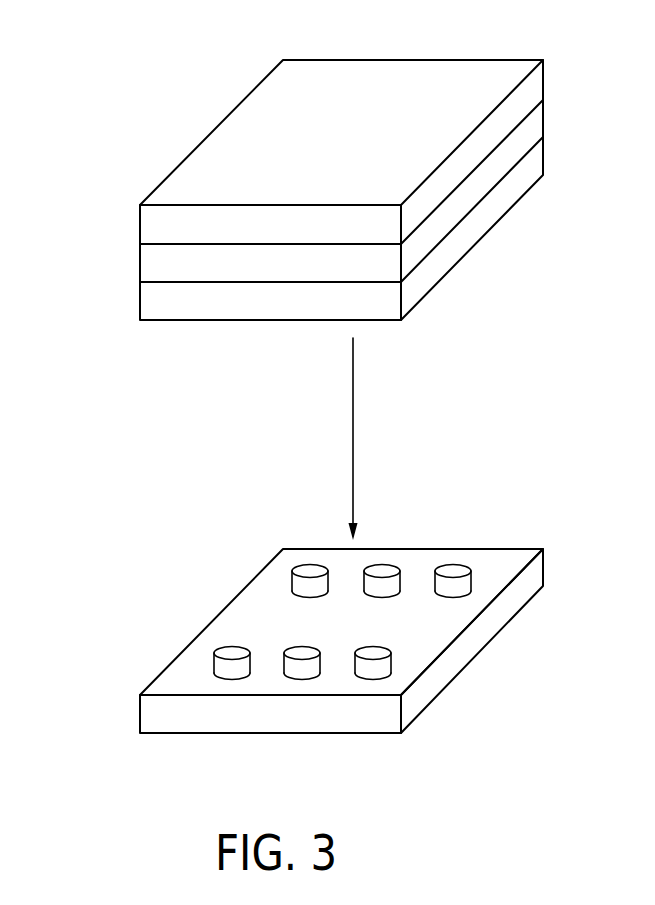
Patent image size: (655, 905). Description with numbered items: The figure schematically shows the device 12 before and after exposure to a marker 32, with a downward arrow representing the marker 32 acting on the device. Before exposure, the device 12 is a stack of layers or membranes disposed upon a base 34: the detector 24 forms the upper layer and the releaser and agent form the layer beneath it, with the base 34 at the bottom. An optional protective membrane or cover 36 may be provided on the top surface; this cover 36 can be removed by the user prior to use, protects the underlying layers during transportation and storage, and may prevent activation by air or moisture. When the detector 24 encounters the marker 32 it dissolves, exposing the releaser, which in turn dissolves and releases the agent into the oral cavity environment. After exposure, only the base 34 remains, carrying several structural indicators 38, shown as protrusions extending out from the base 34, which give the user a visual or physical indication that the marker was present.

The device 12 is at (189, 98).
The detector 24 is at (420, 208).
The marker 32 is at (378, 467).
The base 34 is at (420, 284).
The protective membrane or cover 36 is at (384, 84).
The structural indicator 38 is at (388, 568).